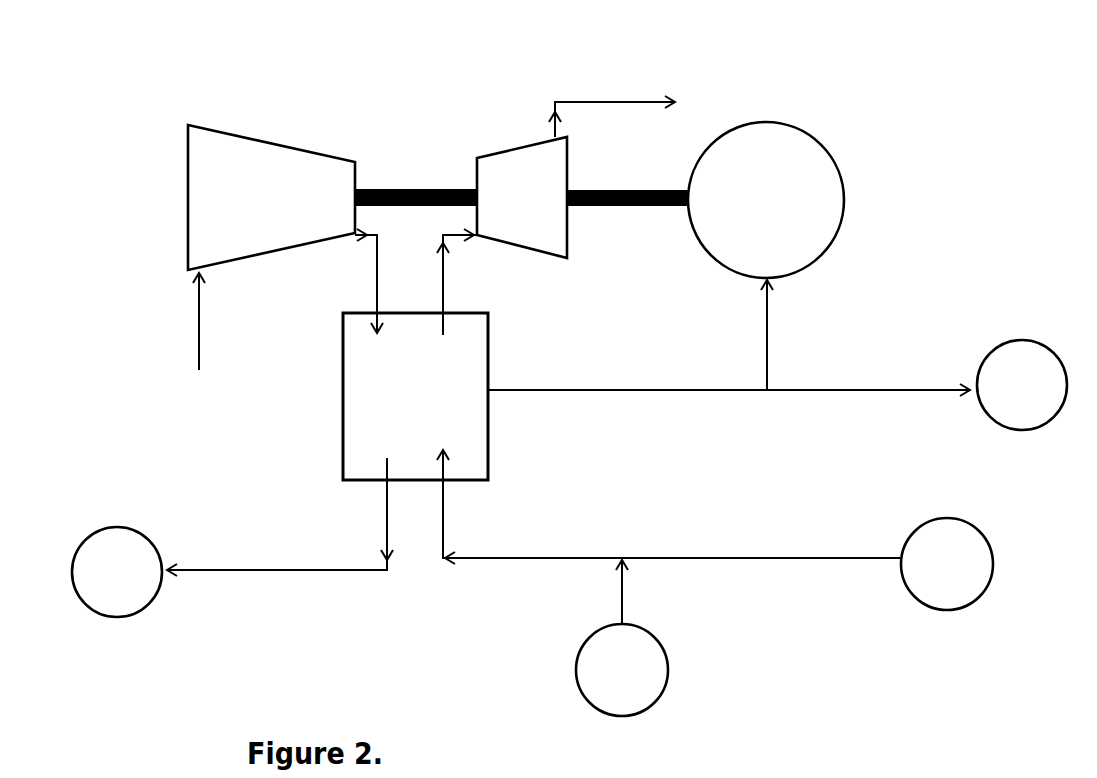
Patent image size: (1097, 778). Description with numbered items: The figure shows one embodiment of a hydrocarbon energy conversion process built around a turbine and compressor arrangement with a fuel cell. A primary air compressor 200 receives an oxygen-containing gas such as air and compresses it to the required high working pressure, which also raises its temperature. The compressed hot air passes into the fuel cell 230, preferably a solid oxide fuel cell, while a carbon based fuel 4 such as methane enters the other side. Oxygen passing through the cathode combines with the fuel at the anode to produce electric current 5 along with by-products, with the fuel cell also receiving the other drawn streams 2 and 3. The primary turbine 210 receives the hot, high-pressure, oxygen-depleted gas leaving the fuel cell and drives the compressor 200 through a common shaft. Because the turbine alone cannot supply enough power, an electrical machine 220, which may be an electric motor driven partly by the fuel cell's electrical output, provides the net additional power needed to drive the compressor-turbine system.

The primary air compressor 200 is at (258, 127).
The primary turbine 210 is at (502, 128).
The electrical machine 220 is at (767, 118).
The fuel cell 230 is at (488, 432).
The stream 2 (SOFC outlet stream) 2 is at (117, 572).
The stream 3 (feed stream) 3 is at (622, 670).
The carbon based fuel 4 is at (947, 564).
The electric current 5 is at (1022, 385).